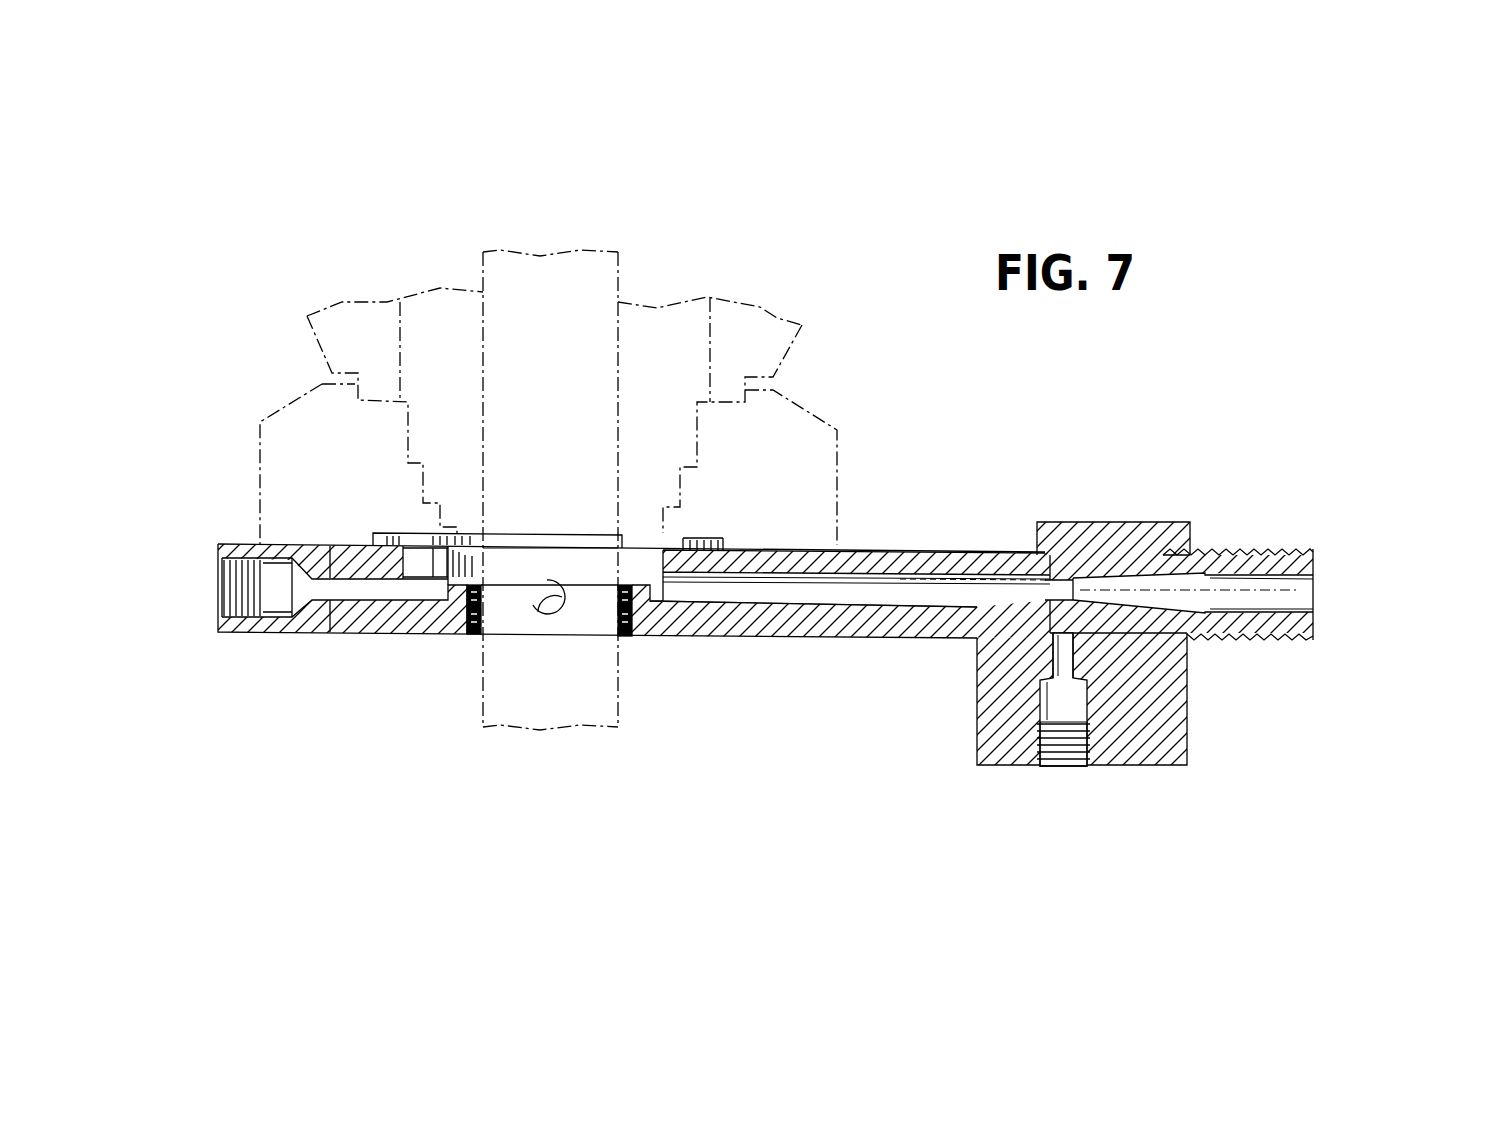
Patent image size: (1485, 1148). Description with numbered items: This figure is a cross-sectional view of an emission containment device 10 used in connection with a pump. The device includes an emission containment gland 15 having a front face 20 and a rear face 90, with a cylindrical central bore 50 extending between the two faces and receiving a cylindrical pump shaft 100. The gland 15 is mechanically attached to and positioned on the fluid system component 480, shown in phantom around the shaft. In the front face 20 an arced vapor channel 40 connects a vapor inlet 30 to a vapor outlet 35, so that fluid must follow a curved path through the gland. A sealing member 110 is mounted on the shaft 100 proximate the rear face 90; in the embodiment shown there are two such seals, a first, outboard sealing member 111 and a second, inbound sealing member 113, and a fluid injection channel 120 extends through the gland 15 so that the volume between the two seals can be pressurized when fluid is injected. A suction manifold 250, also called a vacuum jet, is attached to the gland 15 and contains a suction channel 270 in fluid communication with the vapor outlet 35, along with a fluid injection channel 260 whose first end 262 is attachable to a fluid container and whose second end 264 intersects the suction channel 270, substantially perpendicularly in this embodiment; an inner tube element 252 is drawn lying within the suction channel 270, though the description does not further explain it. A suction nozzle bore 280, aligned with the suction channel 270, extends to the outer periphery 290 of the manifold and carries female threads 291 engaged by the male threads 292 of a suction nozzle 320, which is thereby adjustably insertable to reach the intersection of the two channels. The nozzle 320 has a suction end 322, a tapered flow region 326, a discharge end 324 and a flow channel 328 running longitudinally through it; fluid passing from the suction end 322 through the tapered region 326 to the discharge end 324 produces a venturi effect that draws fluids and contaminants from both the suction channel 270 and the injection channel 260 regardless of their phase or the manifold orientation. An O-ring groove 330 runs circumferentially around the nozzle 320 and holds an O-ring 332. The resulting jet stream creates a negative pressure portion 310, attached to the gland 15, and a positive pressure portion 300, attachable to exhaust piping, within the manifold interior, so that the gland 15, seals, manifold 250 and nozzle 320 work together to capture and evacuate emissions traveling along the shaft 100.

The emission containment device 10 is at (606, 645).
The emission containment gland 15 is at (360, 636).
The front face 20 is at (345, 545).
The vapor inlet 30 is at (232, 591).
The vapor outlet 35 is at (708, 603).
The vapor channel 40 is at (550, 513).
The central bore 50 is at (628, 560).
The rear face 90 is at (398, 640).
The pump shaft 100 is at (606, 283).
The sealing member 110 is at (636, 640).
The first sealing member 111 is at (640, 637).
The second sealing member 113 is at (636, 582).
The fluid injection channel 120 is at (542, 608).
The suction manifold 250 is at (1026, 530).
The inner tube 252 is at (940, 590).
The fluid injection channel 260 is at (992, 751).
The first end 262 is at (1065, 768).
The second end 264 is at (1040, 668).
The suction channel 270 is at (875, 585).
The suction nozzle bore 280 is at (1127, 524).
The outer periphery 290 is at (1197, 540).
The female threads 291 is at (1190, 762).
The male threads 292 is at (1292, 550).
The positive pressure portion 300 is at (1315, 580).
The negative pressure portion 310 is at (805, 592).
The suction nozzle 320 is at (1308, 650).
The suction end 322 is at (1008, 547).
The discharge end 324 is at (1190, 596).
The tapered flow region 326 is at (1215, 616).
The flow channel 328 is at (1250, 548).
The O-ring groove 330 is at (1175, 555).
The O-ring 332 is at (1190, 653).
The fluid system component 480 is at (303, 438).